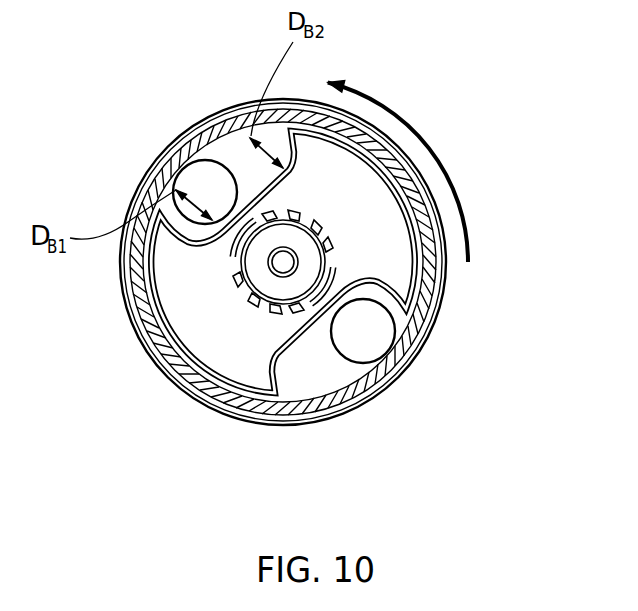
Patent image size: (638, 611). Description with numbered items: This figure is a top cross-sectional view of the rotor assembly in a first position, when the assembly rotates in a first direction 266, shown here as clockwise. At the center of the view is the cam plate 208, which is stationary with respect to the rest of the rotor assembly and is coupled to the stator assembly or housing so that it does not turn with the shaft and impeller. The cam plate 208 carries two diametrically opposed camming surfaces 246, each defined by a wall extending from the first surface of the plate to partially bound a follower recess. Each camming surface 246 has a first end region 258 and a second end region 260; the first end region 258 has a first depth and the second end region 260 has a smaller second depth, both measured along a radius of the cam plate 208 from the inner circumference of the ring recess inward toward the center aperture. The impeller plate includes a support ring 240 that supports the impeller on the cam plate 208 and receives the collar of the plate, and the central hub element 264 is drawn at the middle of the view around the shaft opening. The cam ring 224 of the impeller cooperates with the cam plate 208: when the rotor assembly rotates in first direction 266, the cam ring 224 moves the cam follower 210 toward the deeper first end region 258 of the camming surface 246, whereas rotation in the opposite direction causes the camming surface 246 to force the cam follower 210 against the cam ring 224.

The cam plate 208 is at (390, 383).
The cam follower 210 is at (200, 180).
The cam ring 224 is at (420, 197).
The support ring 240 is at (320, 207).
The camming surface 246 is at (250, 136).
The first end region 258 is at (152, 192).
The second end region 260 is at (277, 128).
The hub 264 is at (433, 183).
The first direction 266 is at (425, 95).